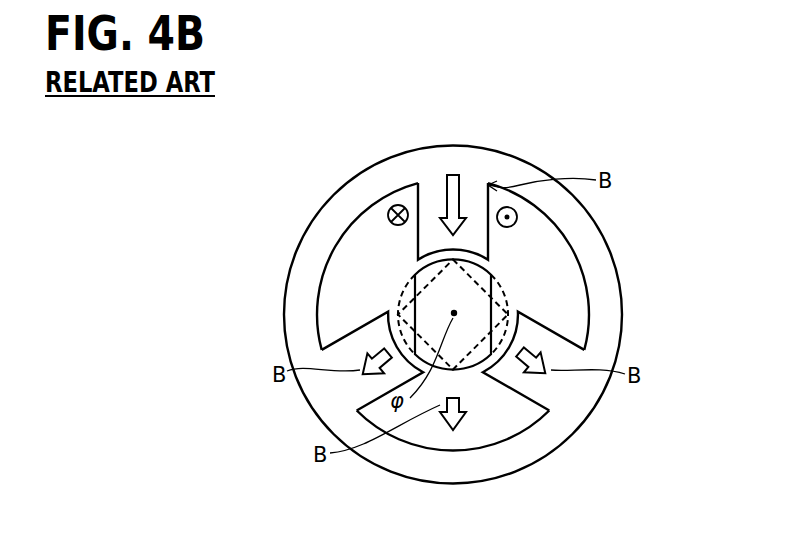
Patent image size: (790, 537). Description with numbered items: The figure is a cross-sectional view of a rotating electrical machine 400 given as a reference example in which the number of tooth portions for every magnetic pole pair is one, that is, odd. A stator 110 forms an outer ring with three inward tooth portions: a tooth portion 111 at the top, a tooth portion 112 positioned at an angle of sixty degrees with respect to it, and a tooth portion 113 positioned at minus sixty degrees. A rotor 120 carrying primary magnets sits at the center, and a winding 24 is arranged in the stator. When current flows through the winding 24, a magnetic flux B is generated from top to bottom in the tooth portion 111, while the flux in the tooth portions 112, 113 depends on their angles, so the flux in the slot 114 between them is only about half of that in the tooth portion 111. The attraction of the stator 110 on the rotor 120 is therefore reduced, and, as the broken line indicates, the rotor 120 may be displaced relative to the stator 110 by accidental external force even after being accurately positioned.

The rotating electrical machine 400 is at (359, 166).
The stator 110 is at (587, 240).
The tooth portion 111 is at (498, 191).
The tooth portion 112 is at (550, 395).
The tooth portion 113 is at (354, 392).
The slot 114 is at (477, 430).
The rotor 120 is at (508, 307).
The winding 24 is at (384, 218).